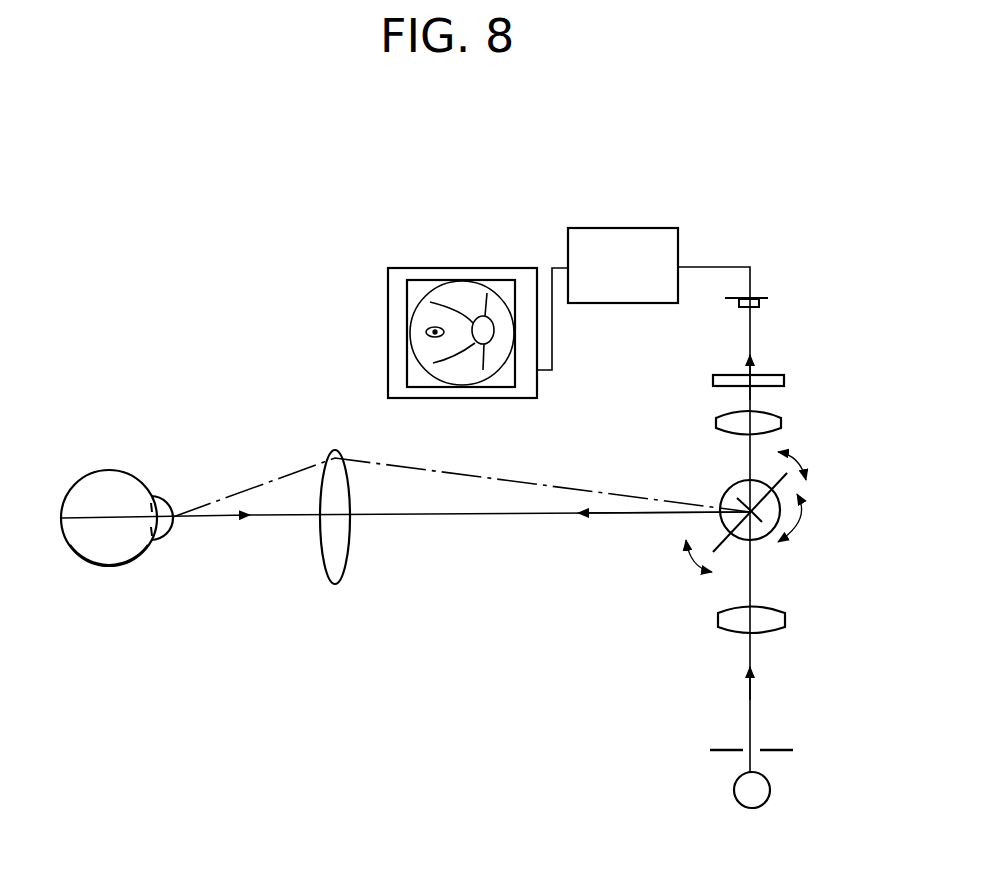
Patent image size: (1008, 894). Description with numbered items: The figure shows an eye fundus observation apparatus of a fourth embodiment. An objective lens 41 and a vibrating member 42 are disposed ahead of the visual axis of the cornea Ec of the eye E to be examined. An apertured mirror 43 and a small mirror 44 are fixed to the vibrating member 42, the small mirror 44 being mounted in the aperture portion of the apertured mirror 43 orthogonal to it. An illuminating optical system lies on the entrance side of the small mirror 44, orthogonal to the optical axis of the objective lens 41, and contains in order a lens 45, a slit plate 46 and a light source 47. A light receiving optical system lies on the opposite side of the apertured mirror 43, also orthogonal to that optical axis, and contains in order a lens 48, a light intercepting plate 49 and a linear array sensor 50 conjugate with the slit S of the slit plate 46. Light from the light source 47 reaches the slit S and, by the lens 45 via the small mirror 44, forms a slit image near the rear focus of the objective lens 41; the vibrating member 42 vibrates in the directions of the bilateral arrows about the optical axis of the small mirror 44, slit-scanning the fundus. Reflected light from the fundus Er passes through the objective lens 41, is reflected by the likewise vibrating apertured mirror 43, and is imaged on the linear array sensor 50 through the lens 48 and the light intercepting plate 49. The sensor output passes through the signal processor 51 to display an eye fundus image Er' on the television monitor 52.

The objective lens 41 is at (343, 548).
The vibrating member 42 is at (790, 493).
The apertured mirror 43 is at (788, 476).
The small mirror 44 is at (762, 522).
The lens 45 is at (782, 614).
The slit plate 46 is at (775, 743).
The light source 47 is at (770, 787).
The lens 48 is at (785, 420).
The light intercepting plate 49 is at (785, 380).
The linear array sensor 50 is at (758, 307).
The signal processor 51 is at (640, 232).
The television monitor 52 is at (490, 270).
The eye to be examined E is at (87, 467).
The cornea Ec is at (165, 497).
The fundus Er is at (109, 579).
The eye fundus image Er' is at (462, 293).
The slit S is at (747, 743).